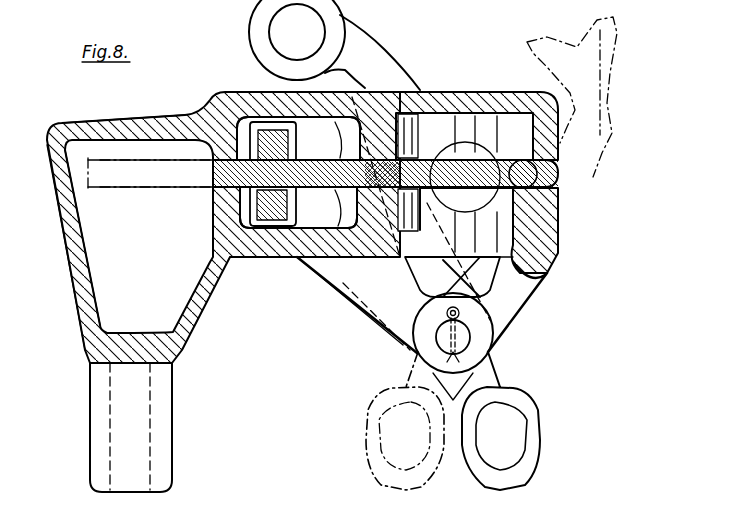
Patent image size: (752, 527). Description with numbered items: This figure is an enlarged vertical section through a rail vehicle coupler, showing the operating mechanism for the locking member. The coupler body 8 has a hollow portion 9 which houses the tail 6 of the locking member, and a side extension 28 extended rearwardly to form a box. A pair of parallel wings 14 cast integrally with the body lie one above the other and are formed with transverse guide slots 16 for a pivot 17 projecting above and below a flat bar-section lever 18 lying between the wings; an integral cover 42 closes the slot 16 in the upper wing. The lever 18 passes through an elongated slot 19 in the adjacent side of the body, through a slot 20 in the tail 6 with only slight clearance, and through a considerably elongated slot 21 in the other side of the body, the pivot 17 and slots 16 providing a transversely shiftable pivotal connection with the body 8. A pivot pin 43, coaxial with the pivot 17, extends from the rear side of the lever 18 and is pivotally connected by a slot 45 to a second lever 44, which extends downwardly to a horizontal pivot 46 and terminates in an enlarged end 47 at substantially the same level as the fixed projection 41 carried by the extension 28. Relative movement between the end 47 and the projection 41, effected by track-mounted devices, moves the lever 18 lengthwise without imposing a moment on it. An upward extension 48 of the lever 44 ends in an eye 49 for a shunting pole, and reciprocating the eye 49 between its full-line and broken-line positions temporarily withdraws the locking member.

The tail of the locking member 6 is at (280, 210).
The coupler body 8 is at (247, 96).
The hollow portion 9 is at (300, 262).
The wings 14 is at (555, 192).
The guide slots 16 is at (503, 125).
The pivot 17 is at (440, 162).
The lever 18 is at (465, 160).
The elongated slot 19 is at (330, 192).
The slot in the tail 20 is at (328, 128).
The elongated slot 21 is at (140, 124).
The side extension 28 is at (72, 277).
The fixed projection 41 is at (100, 438).
The integral cover 42 is at (540, 113).
The pivot pin 43 is at (428, 112).
The lever 44 is at (418, 284).
The slot 45 is at (336, 284).
The horizontal pivot 46 is at (480, 342).
The enlarged end 47 is at (535, 440).
The upward extension 48 is at (385, 70).
The eye 49 is at (252, 45).